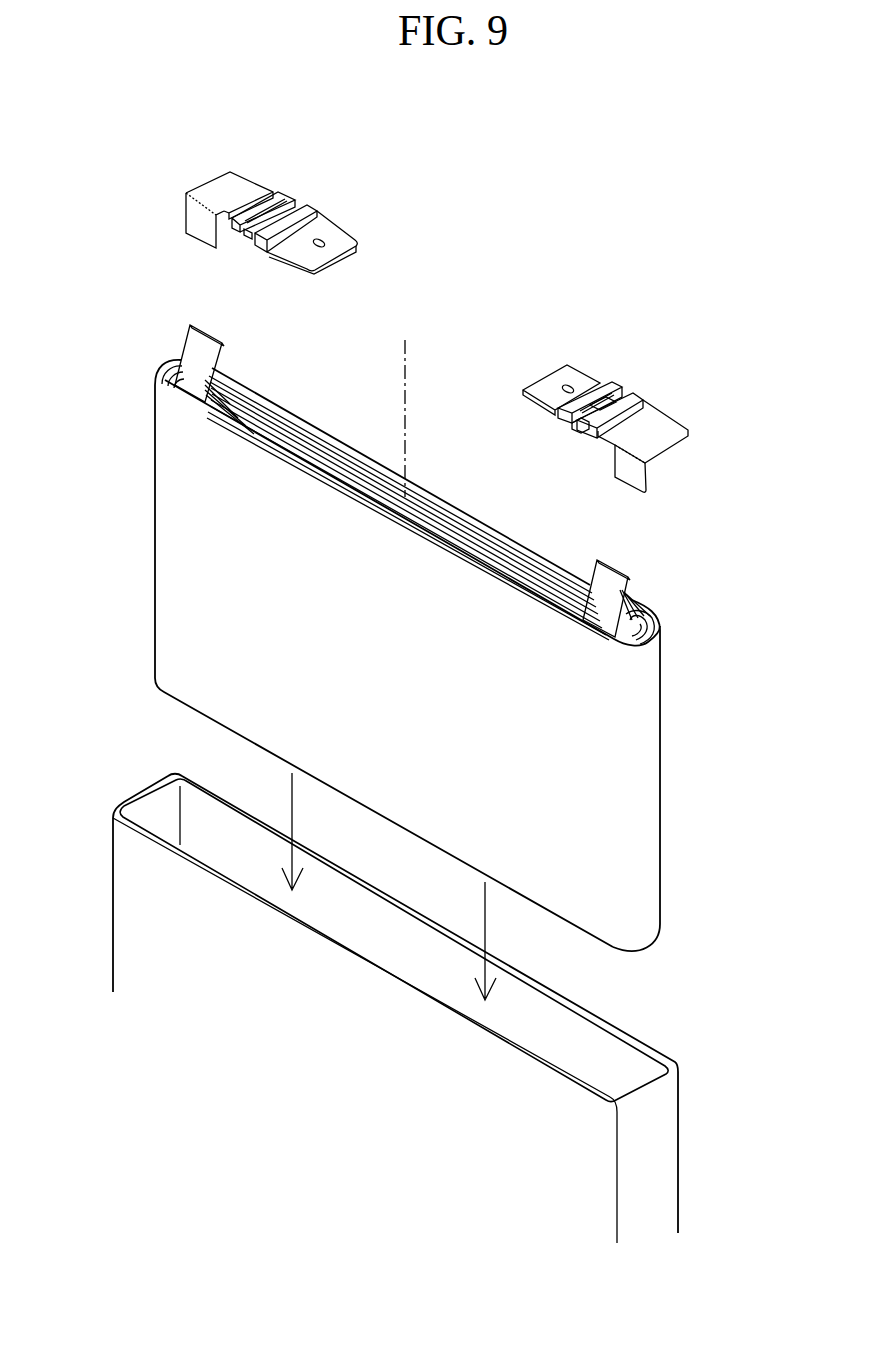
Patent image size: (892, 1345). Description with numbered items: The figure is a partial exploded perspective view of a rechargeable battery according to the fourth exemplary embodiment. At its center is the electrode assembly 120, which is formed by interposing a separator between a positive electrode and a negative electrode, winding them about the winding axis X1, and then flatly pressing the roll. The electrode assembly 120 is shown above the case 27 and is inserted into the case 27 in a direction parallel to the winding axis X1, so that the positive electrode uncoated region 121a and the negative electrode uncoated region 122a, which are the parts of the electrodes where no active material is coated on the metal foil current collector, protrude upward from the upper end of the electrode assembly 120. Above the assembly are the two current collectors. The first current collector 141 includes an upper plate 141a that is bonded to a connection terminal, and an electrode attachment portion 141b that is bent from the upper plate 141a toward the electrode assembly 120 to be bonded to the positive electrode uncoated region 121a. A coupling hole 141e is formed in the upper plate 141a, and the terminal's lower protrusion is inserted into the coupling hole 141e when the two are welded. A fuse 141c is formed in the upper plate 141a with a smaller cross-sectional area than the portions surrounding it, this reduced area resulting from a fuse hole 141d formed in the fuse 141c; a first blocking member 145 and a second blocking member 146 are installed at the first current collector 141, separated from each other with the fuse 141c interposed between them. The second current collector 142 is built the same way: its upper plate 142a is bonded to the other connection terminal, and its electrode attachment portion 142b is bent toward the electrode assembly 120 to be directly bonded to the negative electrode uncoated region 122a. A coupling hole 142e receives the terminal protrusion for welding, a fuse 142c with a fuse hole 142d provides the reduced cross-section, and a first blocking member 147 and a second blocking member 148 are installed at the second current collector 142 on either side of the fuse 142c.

The second current collector 142 is at (249, 166).
The upper plate 142a is at (330, 238).
The electrode attachment portion 142b is at (192, 221).
The fuse 142c is at (248, 243).
The fuse hole 142d is at (223, 178).
The coupling hole 142e is at (323, 249).
The first blocking member 147 is at (308, 210).
The second blocking member 148 is at (281, 193).
The first current collector 141 is at (601, 368).
The upper plate 141a is at (568, 378).
The electrode attachment portion 141b is at (638, 478).
The fuse 141c is at (631, 388).
The fuse hole 141d is at (588, 425).
The coupling hole 141e is at (566, 383).
The first blocking member 145 is at (616, 382).
The second blocking member 146 is at (638, 398).
The electrode assembly 120 is at (682, 673).
The positive electrode uncoated region 121a is at (613, 582).
The negative electrode uncoated region 122a is at (195, 350).
The winding axis X1 is at (412, 383).
The case 27 is at (660, 1150).